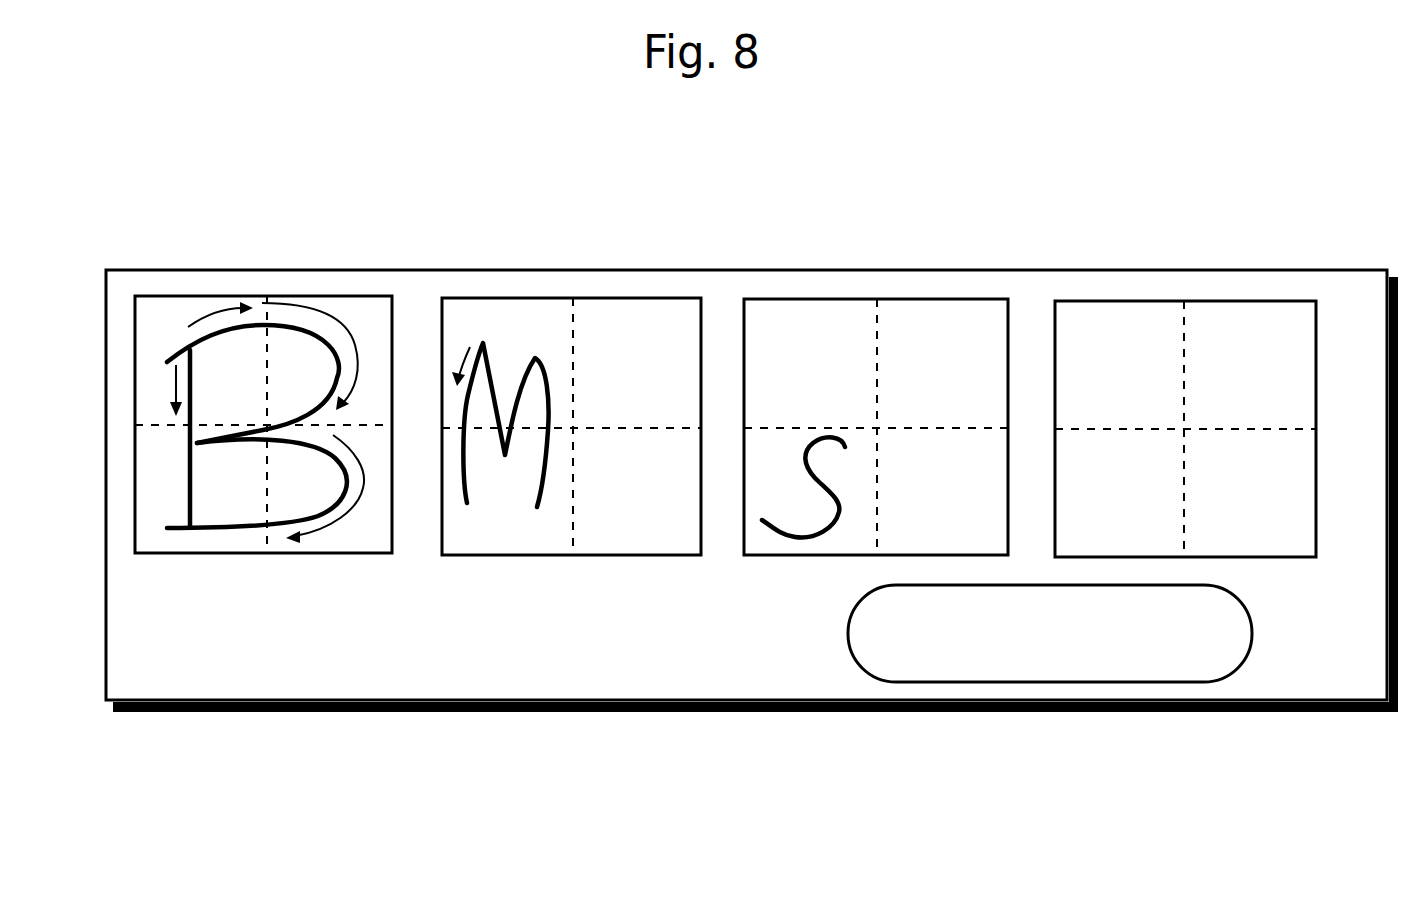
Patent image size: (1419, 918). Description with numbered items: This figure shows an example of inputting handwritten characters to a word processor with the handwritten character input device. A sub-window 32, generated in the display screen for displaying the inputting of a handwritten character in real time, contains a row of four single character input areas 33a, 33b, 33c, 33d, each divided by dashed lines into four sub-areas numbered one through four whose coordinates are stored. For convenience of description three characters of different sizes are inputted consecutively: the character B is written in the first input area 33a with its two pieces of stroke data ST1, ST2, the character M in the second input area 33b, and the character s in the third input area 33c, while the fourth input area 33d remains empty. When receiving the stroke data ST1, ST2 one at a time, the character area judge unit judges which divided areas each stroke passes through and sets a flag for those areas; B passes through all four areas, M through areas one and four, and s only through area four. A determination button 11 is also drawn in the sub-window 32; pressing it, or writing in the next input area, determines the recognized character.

The determination button 11 is at (1033, 682).
The sub-window 32 is at (755, 712).
The single character input area 33a is at (221, 553).
The single character input area 33b is at (525, 555).
The single character input area 33c is at (930, 298).
The single character input area 33d is at (1145, 300).
The stroke data ST1 is at (175, 383).
The stroke data ST2 is at (308, 310).